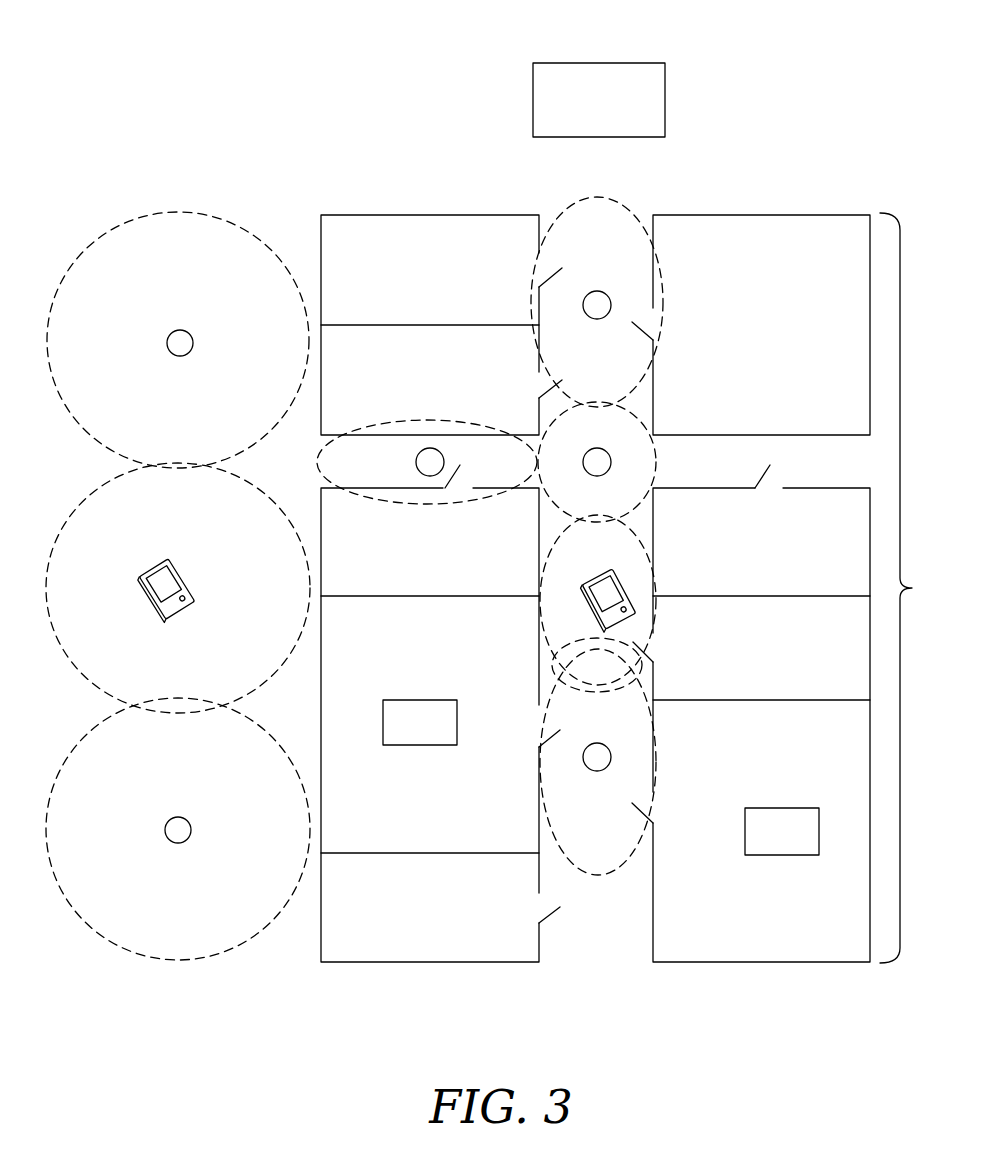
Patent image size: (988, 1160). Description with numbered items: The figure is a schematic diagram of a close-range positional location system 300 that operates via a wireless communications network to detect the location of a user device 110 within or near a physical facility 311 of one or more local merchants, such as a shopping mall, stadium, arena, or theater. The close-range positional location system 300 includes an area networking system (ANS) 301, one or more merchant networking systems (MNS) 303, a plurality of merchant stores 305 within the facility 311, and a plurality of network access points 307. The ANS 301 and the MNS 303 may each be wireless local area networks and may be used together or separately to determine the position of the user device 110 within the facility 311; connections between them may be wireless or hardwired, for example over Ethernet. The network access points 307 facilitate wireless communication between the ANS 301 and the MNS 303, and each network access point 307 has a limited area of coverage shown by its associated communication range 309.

The close-range positional location system 300 is at (808, 44).
The area networking system (ANS) 301 is at (628, 62).
The merchant networking system (MNS) 303 is at (425, 747).
The merchant store 305 is at (470, 311).
The network access point 307 is at (175, 330).
The communication range 309 is at (117, 225).
The facility 311 is at (921, 588).
The user device 110 is at (148, 560).